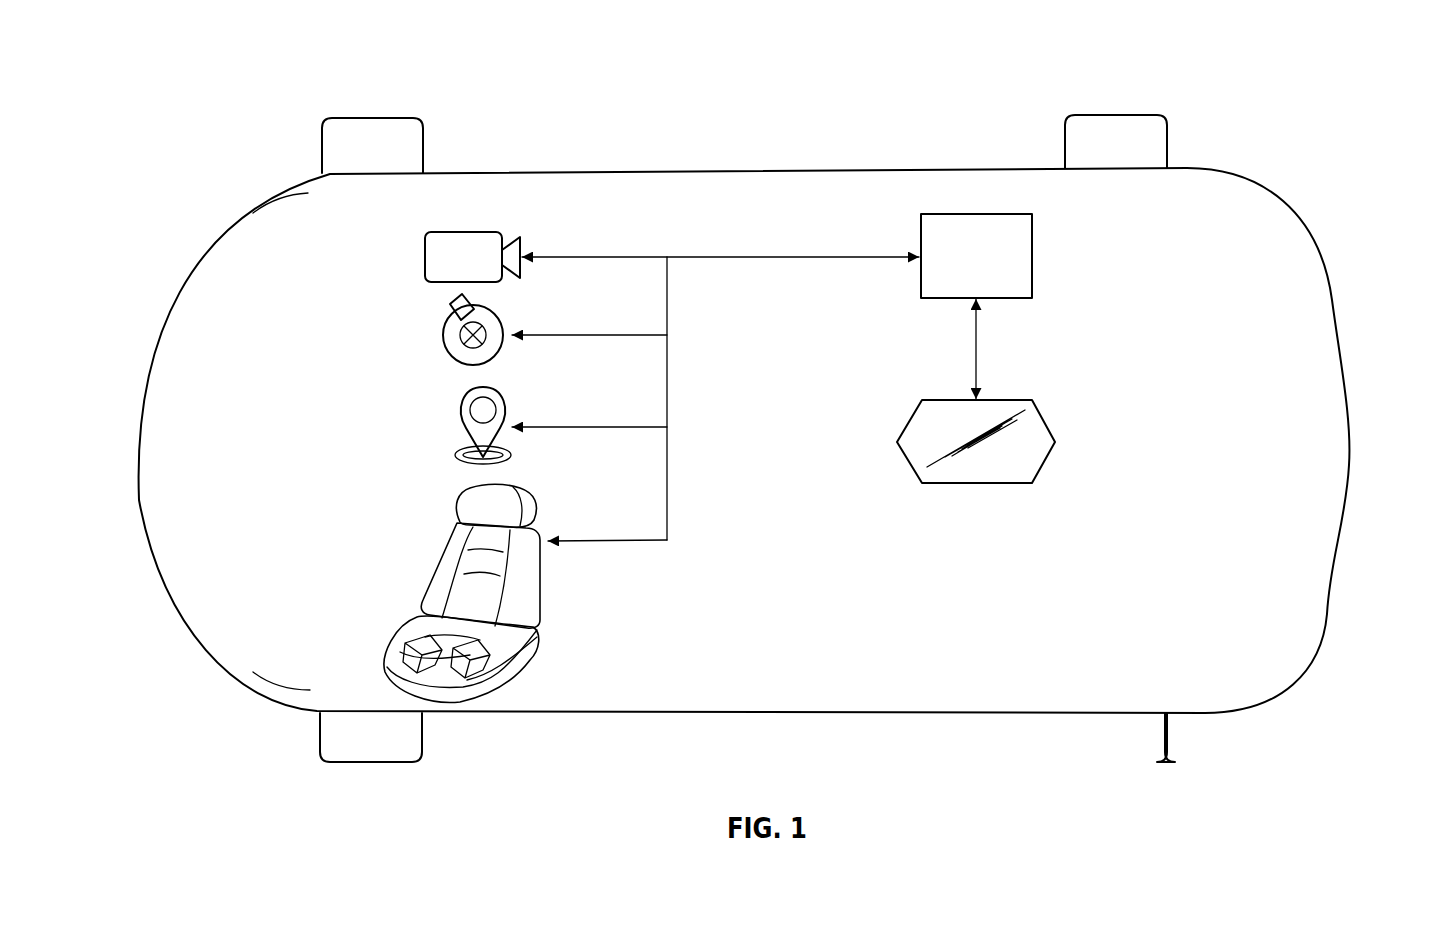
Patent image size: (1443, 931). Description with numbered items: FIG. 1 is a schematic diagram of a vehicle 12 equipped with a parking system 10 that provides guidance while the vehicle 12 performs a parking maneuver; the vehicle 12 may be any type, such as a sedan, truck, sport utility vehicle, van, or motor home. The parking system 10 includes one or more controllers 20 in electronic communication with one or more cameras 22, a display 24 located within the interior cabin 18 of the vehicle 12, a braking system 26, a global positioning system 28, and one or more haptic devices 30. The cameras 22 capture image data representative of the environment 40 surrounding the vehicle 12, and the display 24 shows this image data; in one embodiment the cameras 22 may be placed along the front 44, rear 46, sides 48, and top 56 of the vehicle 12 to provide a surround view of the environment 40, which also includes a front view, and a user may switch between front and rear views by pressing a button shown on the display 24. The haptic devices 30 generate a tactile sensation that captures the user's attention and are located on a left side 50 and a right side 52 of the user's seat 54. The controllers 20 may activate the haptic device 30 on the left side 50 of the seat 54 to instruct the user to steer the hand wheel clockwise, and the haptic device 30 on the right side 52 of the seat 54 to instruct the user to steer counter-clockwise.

The parking system 10 is at (1100, 237).
The vehicle 12 is at (744, 172).
The interior cabin 18 is at (914, 626).
The controllers 20 is at (994, 274).
The cameras 22 is at (450, 232).
The display 24 is at (1055, 442).
The braking system 26 is at (436, 325).
The global positioning system (GPS) 28 is at (462, 396).
The haptic devices 30 is at (397, 650).
The environment 40 is at (1212, 72).
The front 44 is at (1350, 487).
The rear 46 is at (135, 538).
The sides 48 is at (917, 153).
The left side 50 is at (501, 596).
The right side 52 is at (540, 607).
The seat 54 is at (510, 677).
The top 56 is at (268, 273).